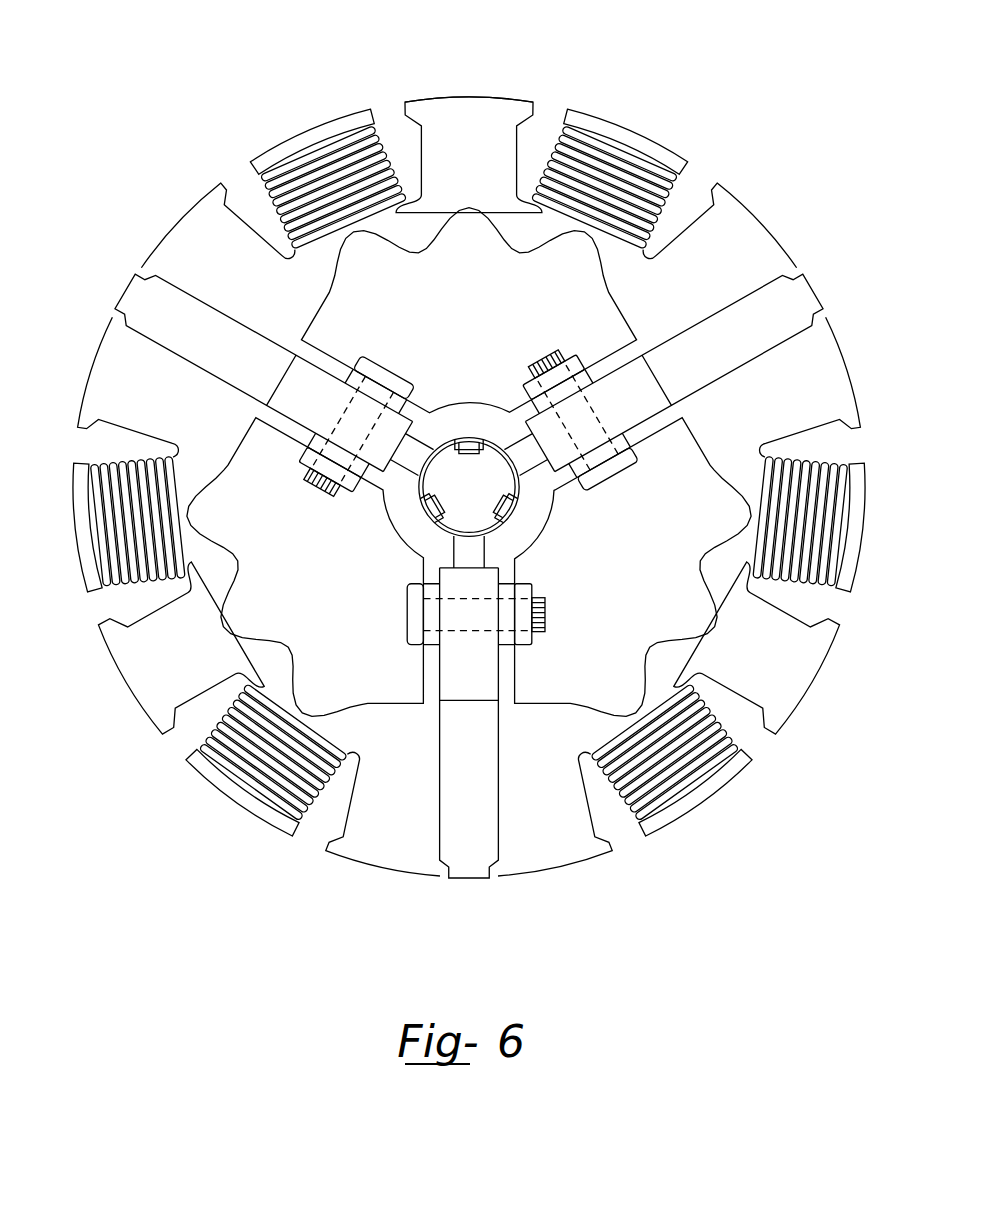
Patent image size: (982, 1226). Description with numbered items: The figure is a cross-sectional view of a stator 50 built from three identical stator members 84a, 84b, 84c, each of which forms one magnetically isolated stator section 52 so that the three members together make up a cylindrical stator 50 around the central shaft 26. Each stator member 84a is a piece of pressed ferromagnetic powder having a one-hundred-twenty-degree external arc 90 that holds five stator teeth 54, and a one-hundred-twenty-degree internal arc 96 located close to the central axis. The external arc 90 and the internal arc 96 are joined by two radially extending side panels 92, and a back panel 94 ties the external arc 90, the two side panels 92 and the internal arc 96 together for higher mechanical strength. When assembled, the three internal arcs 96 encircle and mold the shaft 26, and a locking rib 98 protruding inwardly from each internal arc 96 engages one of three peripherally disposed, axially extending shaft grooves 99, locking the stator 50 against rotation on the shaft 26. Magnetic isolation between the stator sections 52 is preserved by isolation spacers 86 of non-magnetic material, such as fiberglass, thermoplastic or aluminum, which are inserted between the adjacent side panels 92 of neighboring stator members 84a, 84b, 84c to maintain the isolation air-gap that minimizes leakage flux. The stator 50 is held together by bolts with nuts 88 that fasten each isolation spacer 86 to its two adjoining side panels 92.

The central shaft 26 is at (486, 498).
The stator 50 is at (468, 464).
The stator section 52 is at (247, 303).
The stator teeth 54 is at (487, 118).
The stator member 84a is at (492, 195).
The stator member 84b is at (212, 652).
The stator member 84c is at (720, 652).
The isolation spacer 86 is at (290, 383).
The bolts with nuts 88 is at (378, 378).
The external arc 90 is at (669, 305).
The side panel 92 is at (606, 382).
The back panel 94 is at (494, 309).
The internal arc 96 is at (488, 430).
The locking rib 98 is at (510, 510).
The shaft groove 99 is at (438, 505).